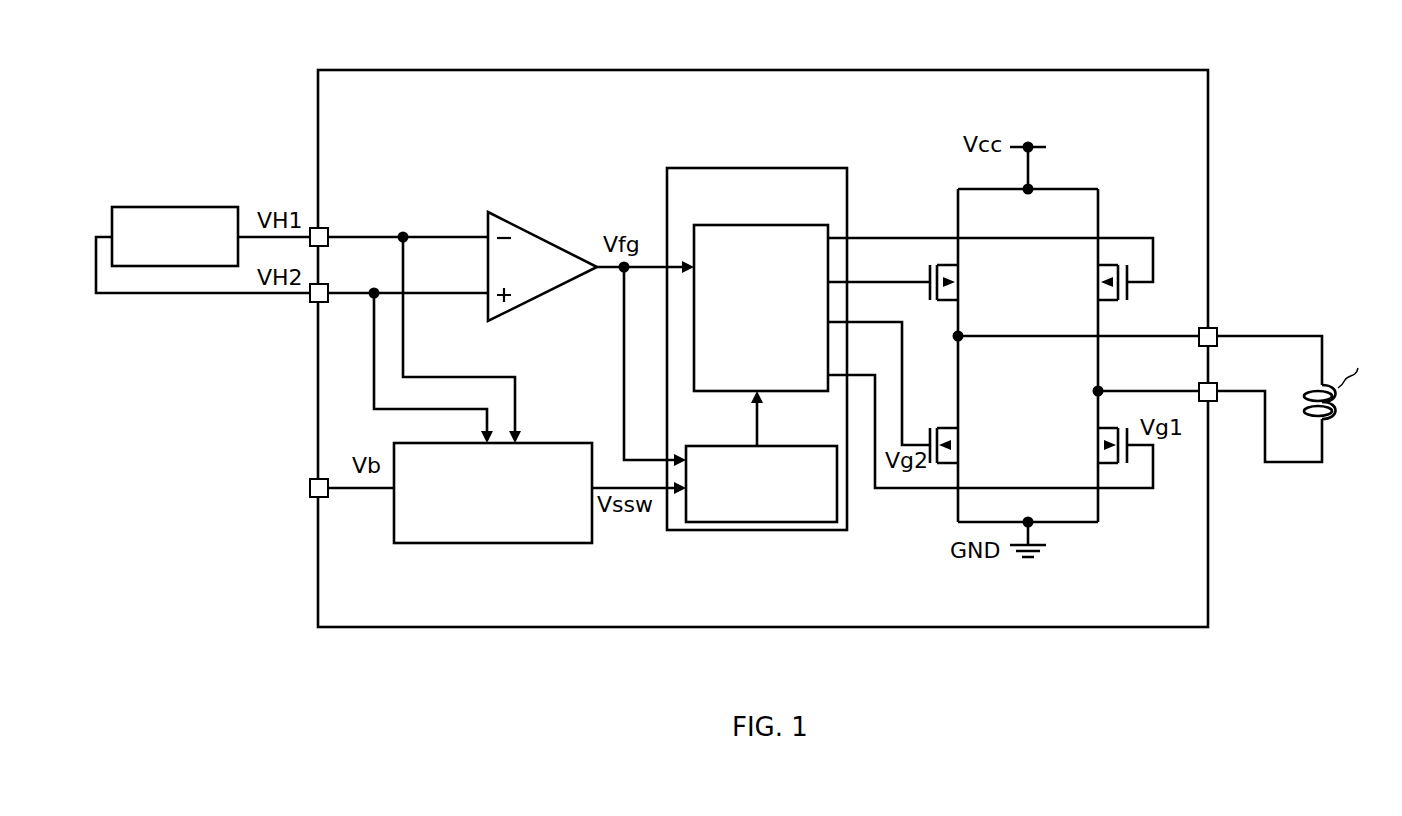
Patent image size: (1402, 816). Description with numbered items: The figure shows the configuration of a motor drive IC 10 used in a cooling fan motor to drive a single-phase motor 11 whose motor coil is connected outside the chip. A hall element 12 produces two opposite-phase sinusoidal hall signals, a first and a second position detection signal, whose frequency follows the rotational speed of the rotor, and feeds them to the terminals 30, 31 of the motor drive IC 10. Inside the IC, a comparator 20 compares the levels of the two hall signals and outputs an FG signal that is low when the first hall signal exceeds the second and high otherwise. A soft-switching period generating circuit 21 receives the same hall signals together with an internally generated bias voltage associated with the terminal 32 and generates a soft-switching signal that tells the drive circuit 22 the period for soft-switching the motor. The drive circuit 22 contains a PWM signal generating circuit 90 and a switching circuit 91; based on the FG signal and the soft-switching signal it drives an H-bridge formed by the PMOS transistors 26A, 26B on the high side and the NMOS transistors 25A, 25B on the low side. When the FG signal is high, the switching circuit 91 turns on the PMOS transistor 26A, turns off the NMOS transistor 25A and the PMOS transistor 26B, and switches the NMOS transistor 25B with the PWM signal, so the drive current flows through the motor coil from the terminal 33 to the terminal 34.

The motor drive IC 10 is at (428, 70).
The single-phase motor 11 is at (1352, 322).
The hall element 12 is at (190, 205).
The comparator 20 is at (535, 228).
The soft-switching period generating circuit 21 is at (567, 443).
The drive circuit 22 is at (818, 168).
The NMOS transistor 25A is at (958, 447).
The NMOS transistor 25B is at (1104, 447).
The PMOS transistor 26A is at (961, 284).
The PMOS transistor 26B is at (1096, 282).
The terminal 30 is at (326, 229).
The terminal 31 is at (310, 303).
The terminal 32 is at (310, 498).
The terminal 33 is at (1215, 328).
The terminal 34 is at (1216, 401).
The PWM signal generating circuit 90 is at (790, 446).
The switching circuit 91 is at (795, 225).